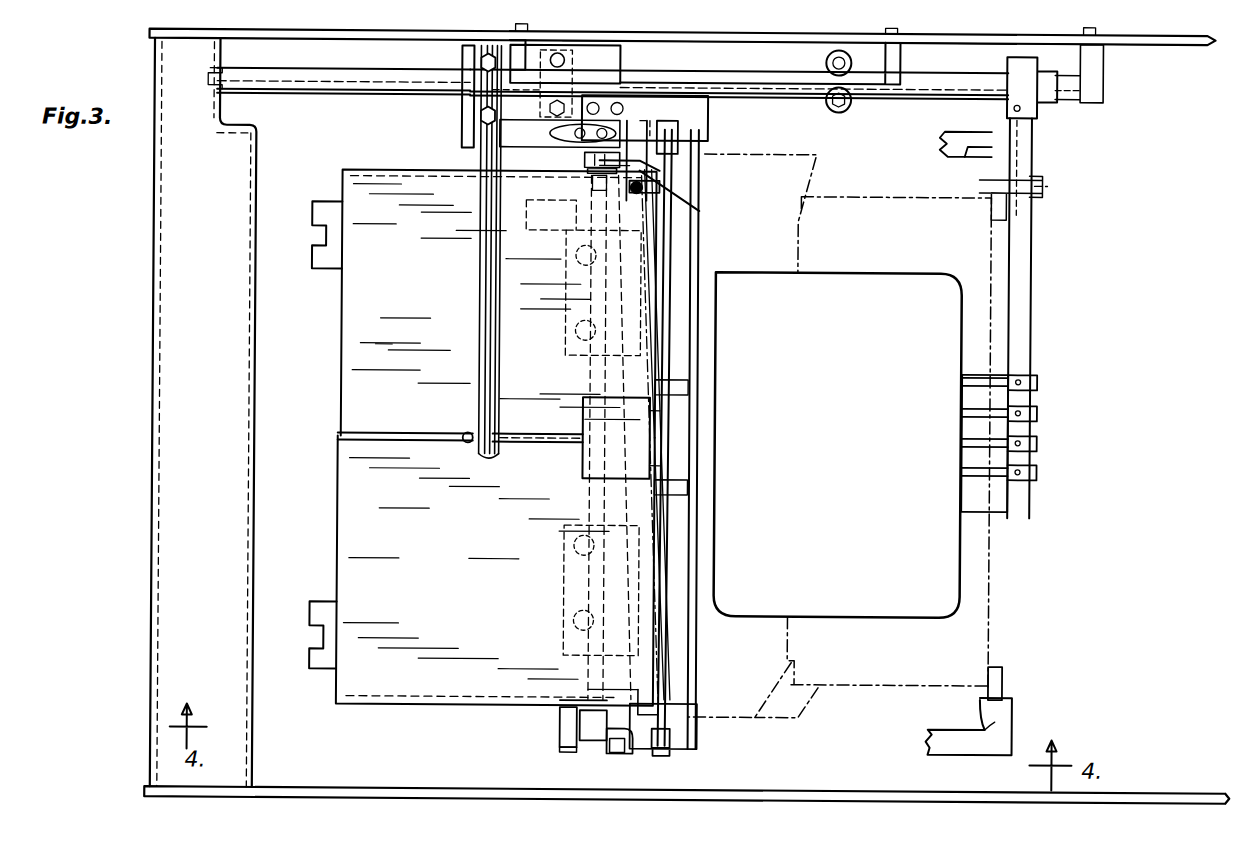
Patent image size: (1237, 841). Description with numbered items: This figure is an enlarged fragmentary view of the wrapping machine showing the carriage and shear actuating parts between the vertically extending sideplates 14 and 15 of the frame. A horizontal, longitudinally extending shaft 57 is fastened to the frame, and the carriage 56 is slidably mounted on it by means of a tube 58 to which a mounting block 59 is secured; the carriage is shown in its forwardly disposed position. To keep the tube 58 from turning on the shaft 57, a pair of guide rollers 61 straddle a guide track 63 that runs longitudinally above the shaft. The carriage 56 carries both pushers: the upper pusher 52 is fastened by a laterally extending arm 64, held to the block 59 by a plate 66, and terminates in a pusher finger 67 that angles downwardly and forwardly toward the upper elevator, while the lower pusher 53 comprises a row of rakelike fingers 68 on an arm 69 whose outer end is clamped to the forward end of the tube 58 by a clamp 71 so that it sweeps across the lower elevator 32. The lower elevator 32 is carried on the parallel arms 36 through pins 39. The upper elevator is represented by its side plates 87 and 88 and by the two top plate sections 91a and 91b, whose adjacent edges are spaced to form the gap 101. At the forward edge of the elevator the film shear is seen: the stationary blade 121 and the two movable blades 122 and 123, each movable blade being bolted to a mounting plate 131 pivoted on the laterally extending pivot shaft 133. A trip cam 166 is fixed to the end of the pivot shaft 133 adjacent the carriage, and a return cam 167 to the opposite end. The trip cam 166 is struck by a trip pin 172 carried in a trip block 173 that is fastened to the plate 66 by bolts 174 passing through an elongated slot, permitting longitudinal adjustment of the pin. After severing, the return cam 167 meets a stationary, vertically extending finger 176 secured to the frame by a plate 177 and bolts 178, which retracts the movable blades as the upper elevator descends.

The sideplate 14 is at (955, 40).
The sideplate 15 is at (848, 801).
The lower elevator 32 is at (878, 703).
The parallel arms 36 is at (963, 747).
The pin 39 is at (1005, 678).
The upper pusher 52 is at (457, 402).
The lower pusher 53 is at (1052, 367).
The carriage 56 is at (634, 42).
The shaft 57 is at (342, 78).
The tube 58 is at (985, 80).
The mounting block 59 is at (575, 49).
The guide rollers 61 is at (848, 65).
The guide track 63 is at (742, 78).
The arm 64 is at (474, 277).
The plate 66 is at (460, 118).
The pusher finger 67 is at (532, 445).
The fingers 68 is at (1040, 470).
The arm 69 is at (1020, 305).
The clamp 71 is at (1035, 110).
The side plate 87 is at (485, 701).
The side plate 88 is at (428, 185).
The top plate section 91a is at (400, 356).
The top plate section 91b is at (418, 614).
The gap 101 is at (402, 443).
The stationary blade 121 is at (697, 645).
The movable blade 122 is at (690, 225).
The movable blade 123 is at (675, 692).
The mounting plate 131 is at (567, 312).
The pivot shaft 133 is at (562, 726).
The trip cam 166 is at (568, 165).
The return cam 167 is at (581, 765).
The trip pin 172 is at (648, 166).
The trip block 173 is at (657, 123).
The bolts 174 is at (550, 134).
The finger 176 is at (617, 760).
The plate 177 is at (642, 753).
The bolts 178 is at (662, 757).